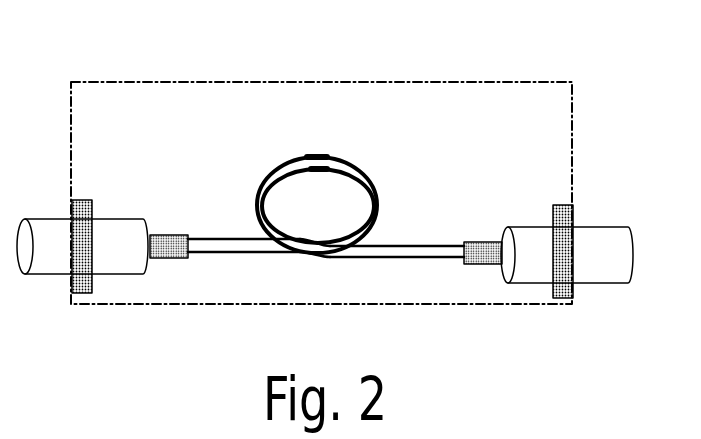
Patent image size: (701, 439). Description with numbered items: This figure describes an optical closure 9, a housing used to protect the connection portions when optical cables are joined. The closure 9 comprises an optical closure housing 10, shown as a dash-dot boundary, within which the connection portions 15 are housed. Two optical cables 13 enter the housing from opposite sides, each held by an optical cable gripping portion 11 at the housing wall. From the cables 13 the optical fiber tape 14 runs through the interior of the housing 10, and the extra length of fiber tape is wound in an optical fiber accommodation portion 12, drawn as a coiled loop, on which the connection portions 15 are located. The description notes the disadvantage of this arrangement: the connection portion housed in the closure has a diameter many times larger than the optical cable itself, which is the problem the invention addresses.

The optical closure 9 is at (434, 68).
The optical closure housing 10 is at (178, 82).
The optical cable gripping portion 11 is at (80, 293).
The optical fiber accommodation portion 12 is at (375, 176).
The optical cable 13 is at (36, 218).
The optical fiber tape 14 is at (211, 238).
The connection portion 15 is at (318, 157).